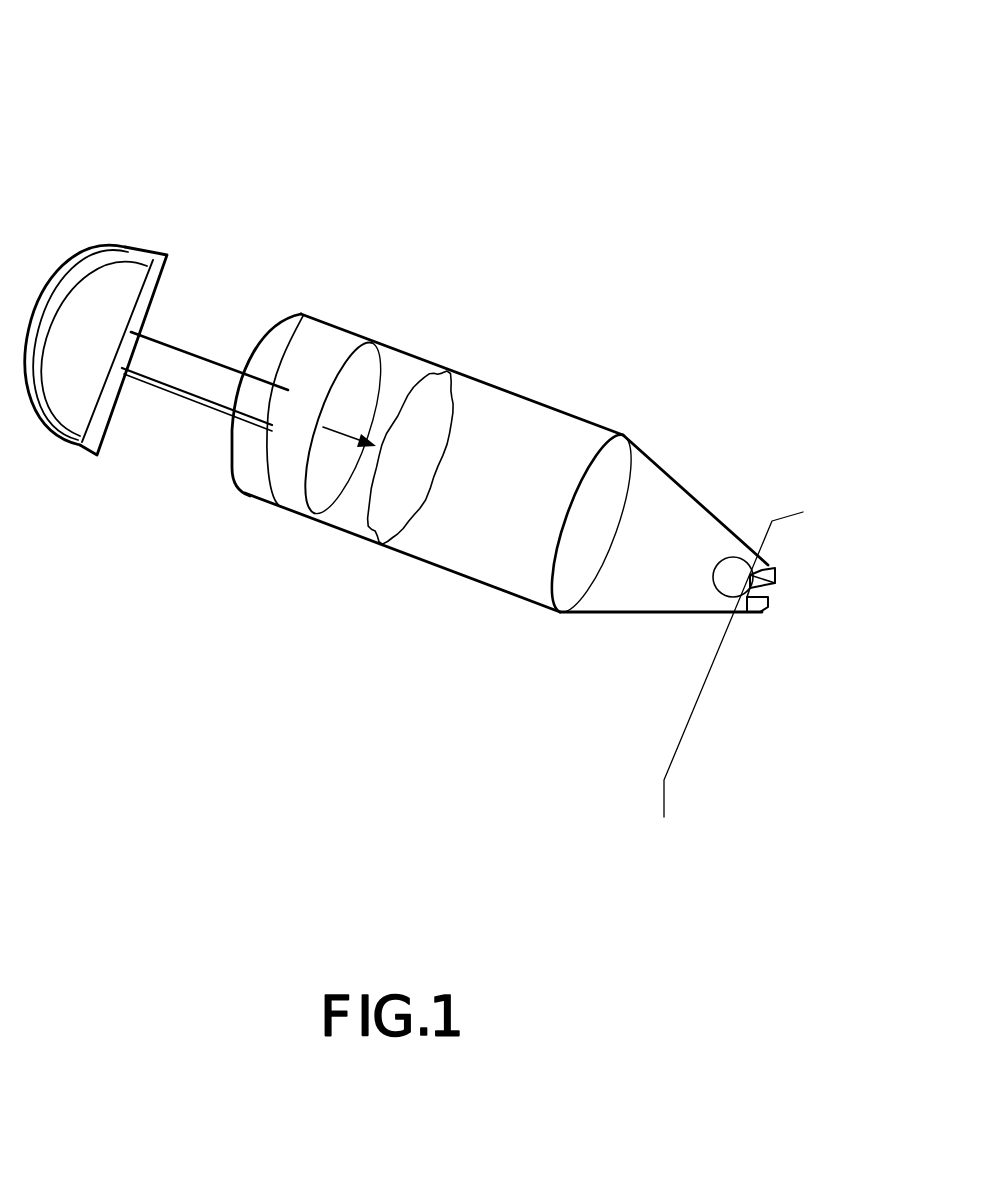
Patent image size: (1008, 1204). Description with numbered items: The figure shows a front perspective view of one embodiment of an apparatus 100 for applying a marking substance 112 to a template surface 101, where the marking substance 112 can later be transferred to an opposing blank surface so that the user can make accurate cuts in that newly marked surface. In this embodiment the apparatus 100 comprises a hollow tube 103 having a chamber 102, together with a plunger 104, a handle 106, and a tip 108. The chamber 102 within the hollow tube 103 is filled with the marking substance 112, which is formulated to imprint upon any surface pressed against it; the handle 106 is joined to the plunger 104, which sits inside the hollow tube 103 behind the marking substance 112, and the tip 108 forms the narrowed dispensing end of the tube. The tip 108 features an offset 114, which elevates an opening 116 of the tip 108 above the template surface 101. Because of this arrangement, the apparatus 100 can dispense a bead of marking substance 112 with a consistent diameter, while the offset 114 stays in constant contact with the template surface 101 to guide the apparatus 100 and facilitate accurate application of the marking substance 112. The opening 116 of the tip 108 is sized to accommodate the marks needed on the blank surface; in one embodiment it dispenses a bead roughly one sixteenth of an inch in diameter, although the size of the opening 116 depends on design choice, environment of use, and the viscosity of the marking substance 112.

The apparatus 100 is at (247, 162).
The template surface 101 is at (652, 769).
The chamber 102 is at (350, 518).
The hollow tube 103 is at (396, 332).
The plunger 104 is at (285, 500).
The handle 106 is at (200, 355).
The tip 108 is at (625, 592).
The marking substance 112 is at (490, 445).
The offset 114 is at (768, 565).
The opening 116 is at (748, 597).